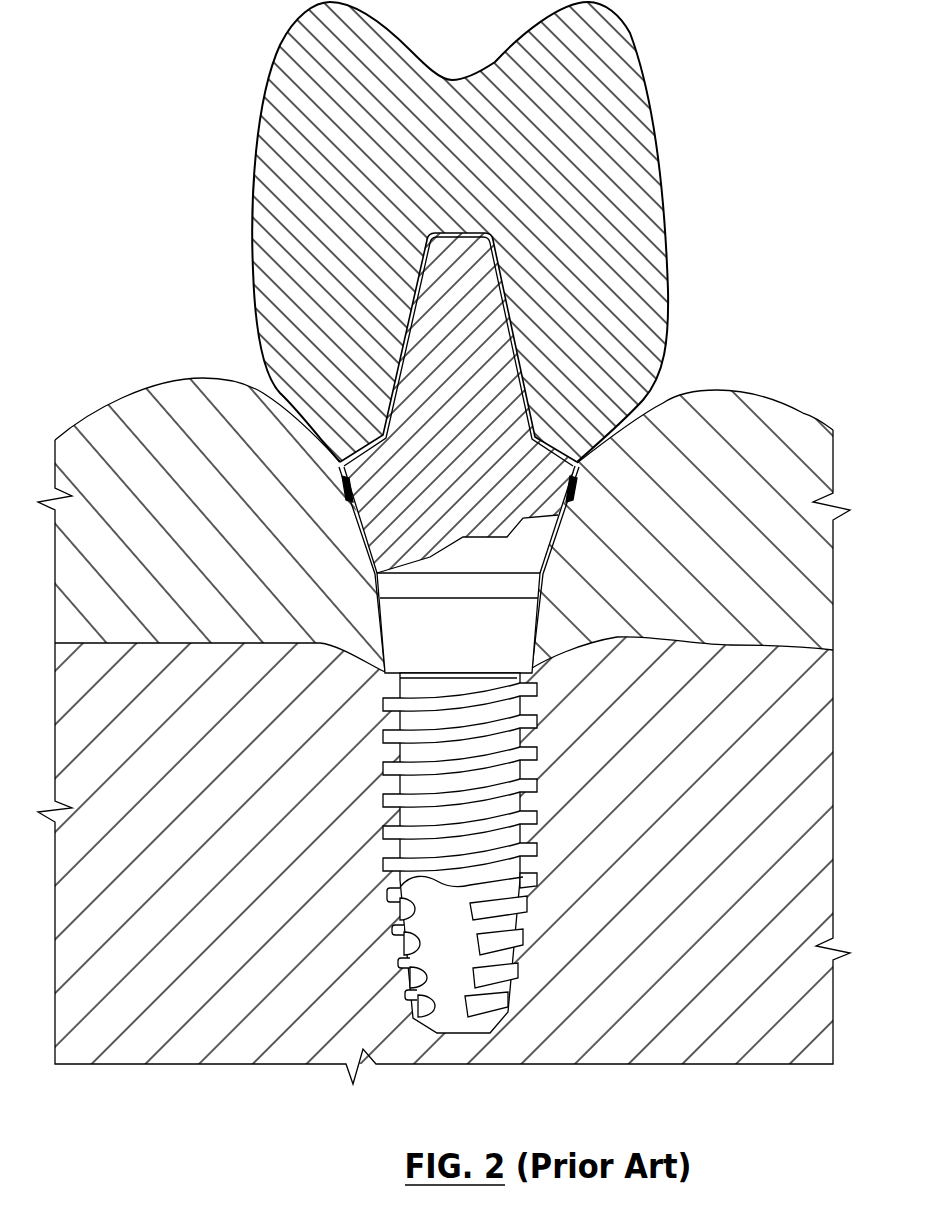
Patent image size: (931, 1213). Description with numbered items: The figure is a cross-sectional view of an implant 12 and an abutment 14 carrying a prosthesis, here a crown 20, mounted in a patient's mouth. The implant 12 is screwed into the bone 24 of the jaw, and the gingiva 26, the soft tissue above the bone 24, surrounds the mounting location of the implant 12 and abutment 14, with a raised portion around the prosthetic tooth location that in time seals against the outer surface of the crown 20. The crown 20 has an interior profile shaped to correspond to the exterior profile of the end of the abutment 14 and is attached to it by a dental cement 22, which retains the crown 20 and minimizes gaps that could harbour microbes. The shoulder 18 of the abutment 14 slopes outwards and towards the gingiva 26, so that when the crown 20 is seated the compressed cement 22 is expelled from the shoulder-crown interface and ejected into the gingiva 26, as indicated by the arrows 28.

The implant 12 is at (443, 777).
The abutment 14 is at (443, 437).
The shoulder 18 is at (386, 467).
The crown 20 is at (443, 151).
The dental cement 22 is at (375, 428).
The bone 24 is at (206, 749).
The gingiva 26 is at (197, 504).
The arrows 28 is at (341, 492).